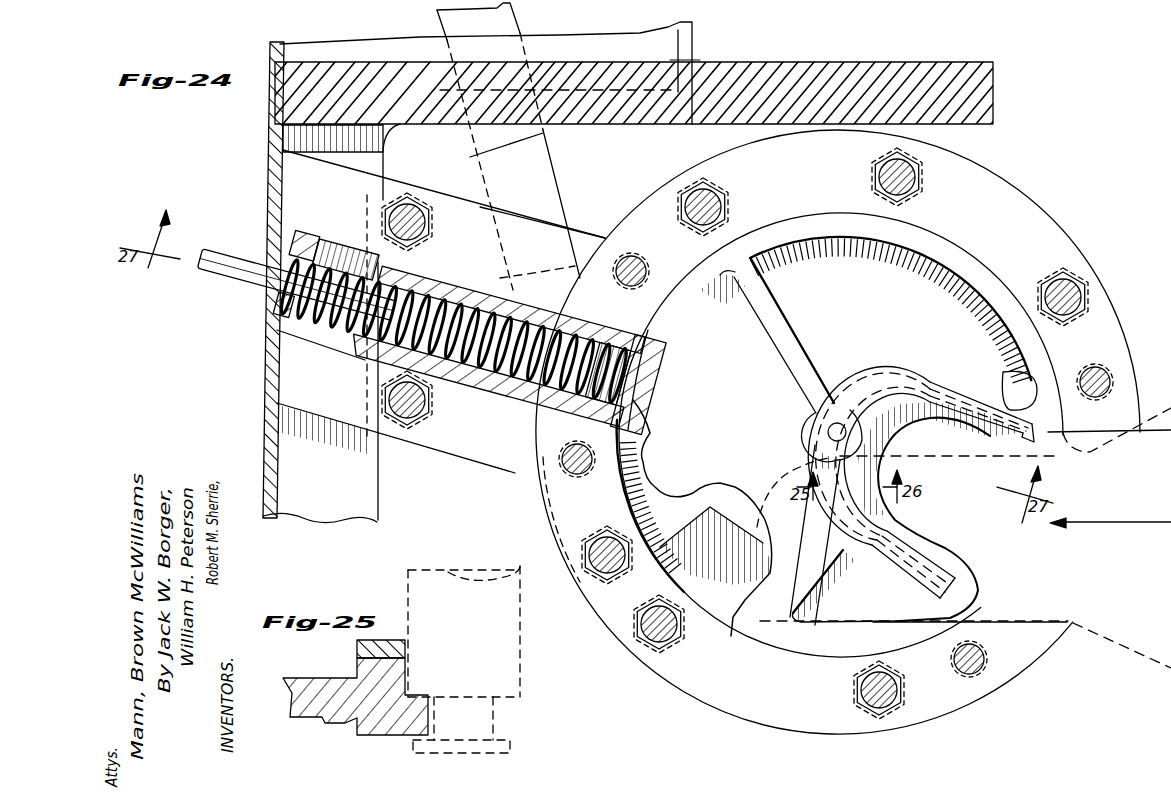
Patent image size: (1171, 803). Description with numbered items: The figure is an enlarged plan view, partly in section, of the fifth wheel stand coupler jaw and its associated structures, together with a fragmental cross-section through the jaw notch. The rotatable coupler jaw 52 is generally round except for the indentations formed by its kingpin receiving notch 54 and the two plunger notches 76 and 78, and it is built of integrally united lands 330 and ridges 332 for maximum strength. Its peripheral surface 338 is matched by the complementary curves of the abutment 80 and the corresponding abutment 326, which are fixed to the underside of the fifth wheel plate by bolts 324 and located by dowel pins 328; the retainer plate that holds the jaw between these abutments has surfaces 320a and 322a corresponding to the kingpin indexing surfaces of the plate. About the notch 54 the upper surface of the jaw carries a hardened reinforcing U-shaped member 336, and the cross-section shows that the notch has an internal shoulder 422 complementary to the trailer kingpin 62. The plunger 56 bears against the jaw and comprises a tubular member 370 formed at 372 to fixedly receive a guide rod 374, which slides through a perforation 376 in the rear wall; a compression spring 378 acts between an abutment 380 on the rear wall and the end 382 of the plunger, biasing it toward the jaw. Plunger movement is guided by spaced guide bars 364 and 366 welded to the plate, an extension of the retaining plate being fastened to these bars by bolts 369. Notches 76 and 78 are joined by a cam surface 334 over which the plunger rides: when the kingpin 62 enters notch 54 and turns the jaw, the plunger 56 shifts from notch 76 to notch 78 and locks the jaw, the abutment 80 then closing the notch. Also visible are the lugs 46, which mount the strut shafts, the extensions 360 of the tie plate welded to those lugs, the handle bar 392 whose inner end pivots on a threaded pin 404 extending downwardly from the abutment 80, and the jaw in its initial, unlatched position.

In FIG. 24, the lug 46 is at (995, 86).
In FIG. 24, the extension 360 is at (692, 40).
In FIG. 24, the handle bar 392 is at (506, 16).
In FIG. 24, the guide bar 364 is at (540, 216).
In FIG. 24, the tubular member 370 is at (560, 287).
In FIG. 24, the compression spring 378 is at (262, 434).
In FIG. 24, the bolt 369 is at (460, 185).
In FIG. 24, the perforation 376 is at (275, 285).
In FIG. 24, the abutment 380 is at (340, 254).
In FIG. 24, the plunger 56 is at (518, 398).
In FIG. 24, the formed portion of tubular member 372 is at (650, 374).
In FIG. 24, the notch 76 is at (640, 394).
In FIG. 24, the end of plunger 382 is at (648, 423).
In FIG. 24, the guide bar 366 is at (516, 475).
In FIG. 24, the coupler jaw 52 is at (928, 252).
In FIG. 25, the coupler jaw 52 is at (322, 719).
In FIG. 24, the abutment 326 is at (1016, 204).
In FIG. 24, the ridge 332 is at (976, 267).
In FIG. 24, the peripheral surface 338 is at (852, 205).
In FIG. 24, the bolt 324 is at (1088, 294).
In FIG. 24, the dowel pin 328 is at (652, 246).
In FIG. 24, the threaded pin 404 is at (586, 549).
In FIG. 24, the land 330 is at (896, 324).
In FIG. 24, the guide rod 374 is at (676, 326).
In FIG. 24, the cam surface 334 is at (617, 483).
In FIG. 24, the surface 322a is at (760, 547).
In FIG. 24, the notch 78 is at (720, 513).
In FIG. 24, the U-shaped member 336 is at (929, 385).
In FIG. 25, the U-shaped member 336 is at (356, 649).
In FIG. 24, the kingpin receiving notch 54 is at (1010, 404).
In FIG. 25, the kingpin receiving notch 54 is at (407, 664).
In FIG. 24, the internal shoulder 422 is at (920, 550).
In FIG. 25, the internal shoulder 422 is at (415, 695).
In FIG. 24, the surface 320a is at (1070, 458).
In FIG. 24, the abutment 80 is at (950, 700).
In FIG. 25, the trailer kingpin 62 is at (478, 706).